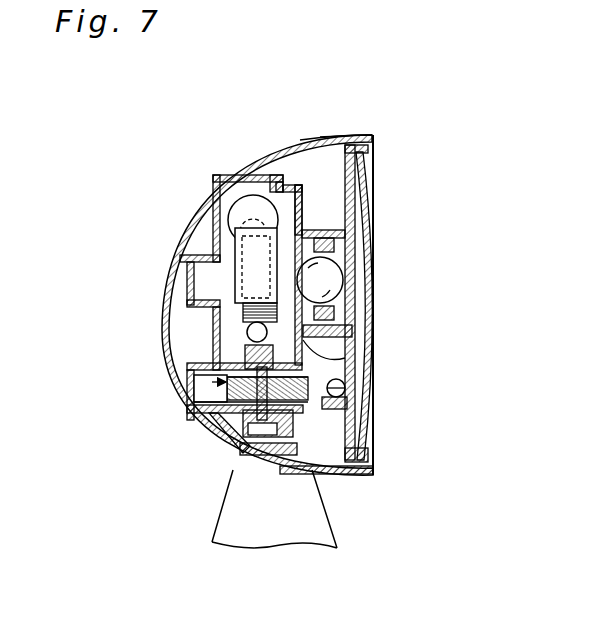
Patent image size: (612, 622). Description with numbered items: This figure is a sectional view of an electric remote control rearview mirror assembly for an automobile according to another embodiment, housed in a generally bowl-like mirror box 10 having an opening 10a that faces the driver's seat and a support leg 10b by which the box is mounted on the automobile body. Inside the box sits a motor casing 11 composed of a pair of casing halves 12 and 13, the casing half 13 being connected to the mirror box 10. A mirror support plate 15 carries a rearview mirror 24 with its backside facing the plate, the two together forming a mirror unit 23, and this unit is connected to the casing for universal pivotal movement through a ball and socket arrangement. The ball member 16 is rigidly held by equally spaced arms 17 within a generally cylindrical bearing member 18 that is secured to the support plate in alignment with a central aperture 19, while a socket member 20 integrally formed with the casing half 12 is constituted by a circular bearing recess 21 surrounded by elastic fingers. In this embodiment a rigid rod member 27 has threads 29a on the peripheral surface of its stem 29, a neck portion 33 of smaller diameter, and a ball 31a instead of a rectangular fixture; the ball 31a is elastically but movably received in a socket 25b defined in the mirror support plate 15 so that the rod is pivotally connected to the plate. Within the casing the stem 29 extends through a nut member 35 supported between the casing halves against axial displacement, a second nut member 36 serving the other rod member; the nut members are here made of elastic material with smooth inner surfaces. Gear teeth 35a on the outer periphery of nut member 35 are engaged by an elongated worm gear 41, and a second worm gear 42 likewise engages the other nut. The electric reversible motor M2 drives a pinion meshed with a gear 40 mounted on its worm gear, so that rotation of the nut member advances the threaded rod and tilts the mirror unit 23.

The mirror box 10 is at (367, 137).
The opening 10a is at (376, 150).
The support leg 10b is at (268, 530).
The motor casing 11 is at (279, 470).
The casing half 12 is at (305, 473).
The casing half 13 is at (188, 278).
The mirror support plate 15 is at (330, 150).
The ball member 16 is at (334, 276).
The arms 17 is at (336, 248).
The bearing member 18 is at (303, 187).
The central aperture 19 is at (336, 298).
The socket member 20 is at (348, 342).
The circular bearing recess 21 is at (284, 178).
The mirror unit 23 is at (375, 184).
The rearview mirror 24 is at (357, 235).
The socket 25b is at (346, 366).
The rod member 27 is at (200, 383).
The stem 29 is at (200, 400).
The threads 29a is at (214, 418).
The ball 31a is at (348, 400).
The neck portion 33 is at (356, 425).
The nut member 35 is at (246, 356).
The gear teeth 35a is at (235, 438).
The nut member 36 is at (242, 312).
The gear 40 is at (233, 214).
The worm gear 41 is at (247, 333).
The worm gear 42 is at (240, 192).
The electric reversible motor M2 is at (236, 252).